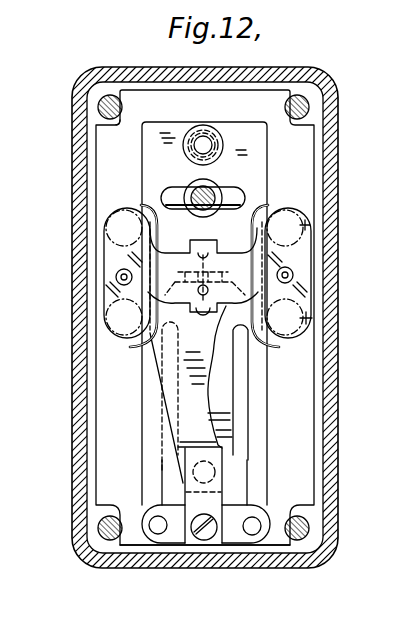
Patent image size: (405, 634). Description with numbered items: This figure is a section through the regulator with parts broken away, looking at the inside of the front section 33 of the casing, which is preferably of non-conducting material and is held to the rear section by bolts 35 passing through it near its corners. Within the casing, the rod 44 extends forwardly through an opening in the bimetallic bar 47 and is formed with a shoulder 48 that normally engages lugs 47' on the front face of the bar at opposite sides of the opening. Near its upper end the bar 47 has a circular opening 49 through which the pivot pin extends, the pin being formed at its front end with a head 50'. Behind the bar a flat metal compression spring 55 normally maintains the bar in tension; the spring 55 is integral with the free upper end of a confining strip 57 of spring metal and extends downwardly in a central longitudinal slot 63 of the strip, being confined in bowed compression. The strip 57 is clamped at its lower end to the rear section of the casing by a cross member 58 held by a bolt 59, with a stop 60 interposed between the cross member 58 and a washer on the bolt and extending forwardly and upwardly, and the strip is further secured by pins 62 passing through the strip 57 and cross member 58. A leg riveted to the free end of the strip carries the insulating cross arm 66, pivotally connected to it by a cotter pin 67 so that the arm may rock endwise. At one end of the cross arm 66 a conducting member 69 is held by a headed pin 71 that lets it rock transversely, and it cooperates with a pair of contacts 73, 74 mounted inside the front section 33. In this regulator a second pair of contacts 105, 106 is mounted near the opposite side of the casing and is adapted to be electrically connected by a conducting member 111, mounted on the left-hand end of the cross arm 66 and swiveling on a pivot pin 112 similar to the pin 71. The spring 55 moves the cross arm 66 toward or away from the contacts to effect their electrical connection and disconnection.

The front section 33 is at (77, 487).
The bolts 35 is at (311, 530).
The rod 44 is at (218, 190).
The bimetallic bar 47 is at (235, 313).
The lugs 47' is at (134, 193).
The shoulder 48 is at (168, 193).
The circular opening 49 is at (221, 152).
The head 50' is at (238, 105).
The compression spring 55 is at (227, 428).
The confining strip 57 is at (260, 378).
The cross member 58 is at (173, 535).
The bolt 59 is at (207, 538).
The stop 60 is at (218, 498).
The pins 62 is at (253, 535).
The longitudinal slot 63 is at (172, 470).
The cross arm 66 is at (247, 255).
The cotter pin 67 is at (195, 252).
The conducting member 69 is at (298, 297).
The headed pin 71 is at (293, 274).
The contact 73 is at (303, 231).
The contact 74 is at (308, 318).
The contact 105 is at (108, 324).
The contact 106 is at (105, 225).
The conducting member 111 is at (116, 277).
The pivot pin 112 is at (104, 297).